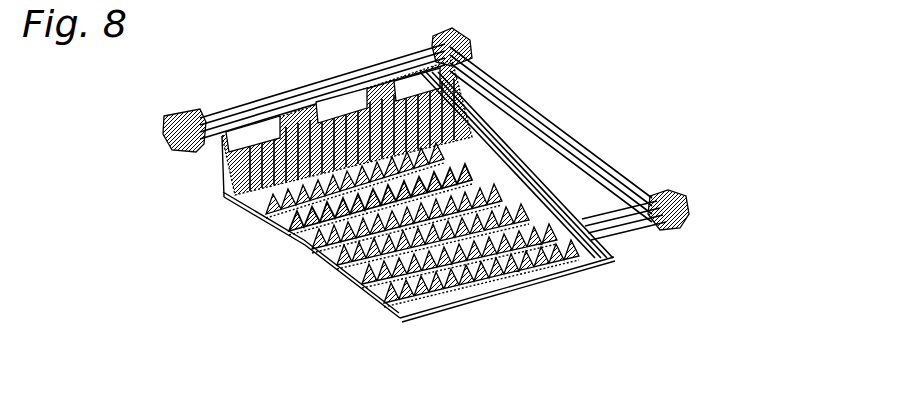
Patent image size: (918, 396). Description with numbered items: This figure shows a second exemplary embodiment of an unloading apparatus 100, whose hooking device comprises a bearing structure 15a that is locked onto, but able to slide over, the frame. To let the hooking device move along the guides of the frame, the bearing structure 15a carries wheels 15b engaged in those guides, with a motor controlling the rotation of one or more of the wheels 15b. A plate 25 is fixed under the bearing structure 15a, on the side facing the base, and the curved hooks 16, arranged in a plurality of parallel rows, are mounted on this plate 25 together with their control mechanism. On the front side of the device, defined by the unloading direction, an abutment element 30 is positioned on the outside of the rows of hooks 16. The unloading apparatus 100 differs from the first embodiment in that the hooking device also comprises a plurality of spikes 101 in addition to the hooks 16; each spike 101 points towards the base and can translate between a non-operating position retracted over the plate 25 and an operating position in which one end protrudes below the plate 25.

The unloading apparatus 100 is at (665, 114).
The bearing structure 15a is at (493, 76).
The wheels 15b is at (688, 210).
The plate 25 is at (483, 187).
The abutment element 30 is at (224, 197).
The curved hooks 16 is at (400, 311).
The spikes 101 is at (408, 308).